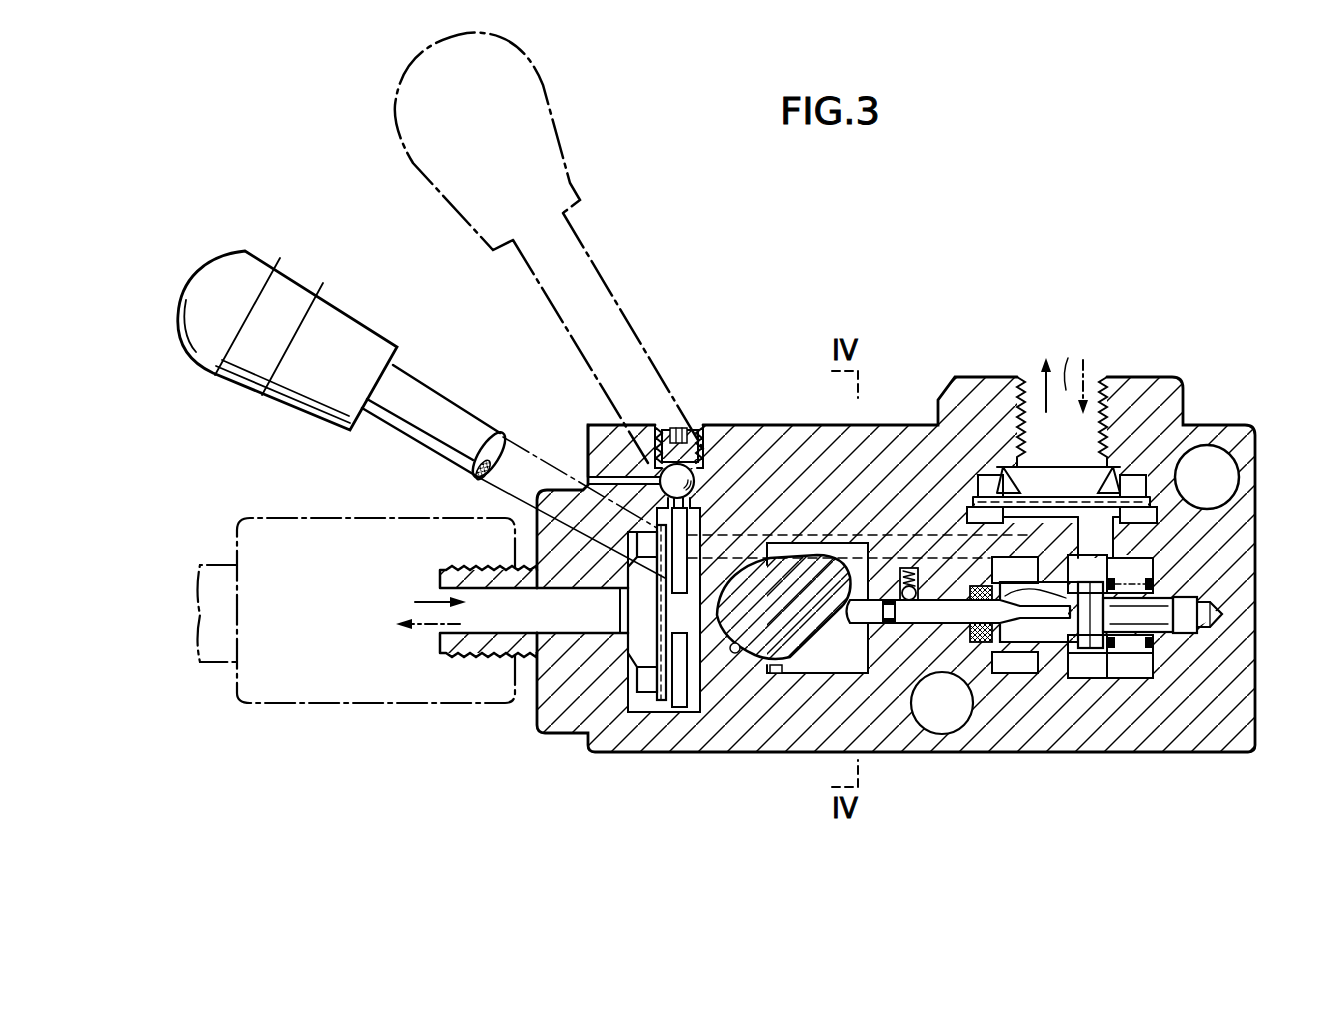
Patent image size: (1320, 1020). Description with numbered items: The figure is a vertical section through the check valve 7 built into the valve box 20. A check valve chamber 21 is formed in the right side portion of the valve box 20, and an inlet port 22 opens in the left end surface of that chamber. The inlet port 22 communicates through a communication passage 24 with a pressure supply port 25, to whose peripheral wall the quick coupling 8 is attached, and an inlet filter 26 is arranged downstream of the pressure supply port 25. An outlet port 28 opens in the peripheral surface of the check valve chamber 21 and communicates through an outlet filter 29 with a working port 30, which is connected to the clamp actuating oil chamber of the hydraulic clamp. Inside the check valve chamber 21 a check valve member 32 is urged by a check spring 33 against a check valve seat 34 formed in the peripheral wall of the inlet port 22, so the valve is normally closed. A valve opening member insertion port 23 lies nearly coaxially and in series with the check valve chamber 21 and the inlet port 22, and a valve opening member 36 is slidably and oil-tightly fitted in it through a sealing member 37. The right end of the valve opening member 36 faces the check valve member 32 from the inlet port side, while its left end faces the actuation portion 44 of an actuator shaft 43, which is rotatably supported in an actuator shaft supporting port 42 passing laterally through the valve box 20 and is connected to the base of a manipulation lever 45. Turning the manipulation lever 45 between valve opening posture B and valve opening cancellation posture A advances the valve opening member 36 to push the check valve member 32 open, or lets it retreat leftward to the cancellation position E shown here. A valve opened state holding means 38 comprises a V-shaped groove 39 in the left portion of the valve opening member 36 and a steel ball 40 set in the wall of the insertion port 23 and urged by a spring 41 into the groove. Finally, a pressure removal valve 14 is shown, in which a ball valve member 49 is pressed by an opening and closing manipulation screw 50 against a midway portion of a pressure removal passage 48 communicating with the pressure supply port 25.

The valve 7 is at (1082, 281).
The quick coupling 8 is at (372, 705).
The pressure removal valve 14 is at (788, 363).
The valve box 20 is at (816, 752).
The check valve chamber 21 is at (1128, 680).
The inlet port 22 is at (1070, 660).
The valve opening member insertion port 23 is at (942, 703).
The communication passage 24 is at (910, 578).
The pressure supply port 25 is at (480, 624).
The inlet filter 26 is at (645, 693).
The outlet port 28 is at (1100, 545).
The outlet filter 29 is at (1132, 490).
The working port 30 is at (1067, 367).
The check valve member 32 is at (1106, 660).
The check spring 33 is at (1190, 640).
The check valve seat 34 is at (1086, 652).
The valve opening member 36 is at (918, 626).
The sealing member 37 is at (983, 644).
The valve opened state holding means 38 is at (995, 565).
The V-shaped groove 39 is at (890, 626).
The steel ball 40 is at (918, 580).
The spring 41 is at (912, 588).
The actuator shaft supporting port 42 is at (668, 690).
The actuator shaft 43 is at (772, 676).
The actuation portion 44 is at (812, 600).
The manipulation lever 45 is at (441, 258).
The pressure removal passage 48 is at (588, 437).
The clip 49 is at (686, 560).
The opening and closing manipulation screw 50 is at (690, 425).